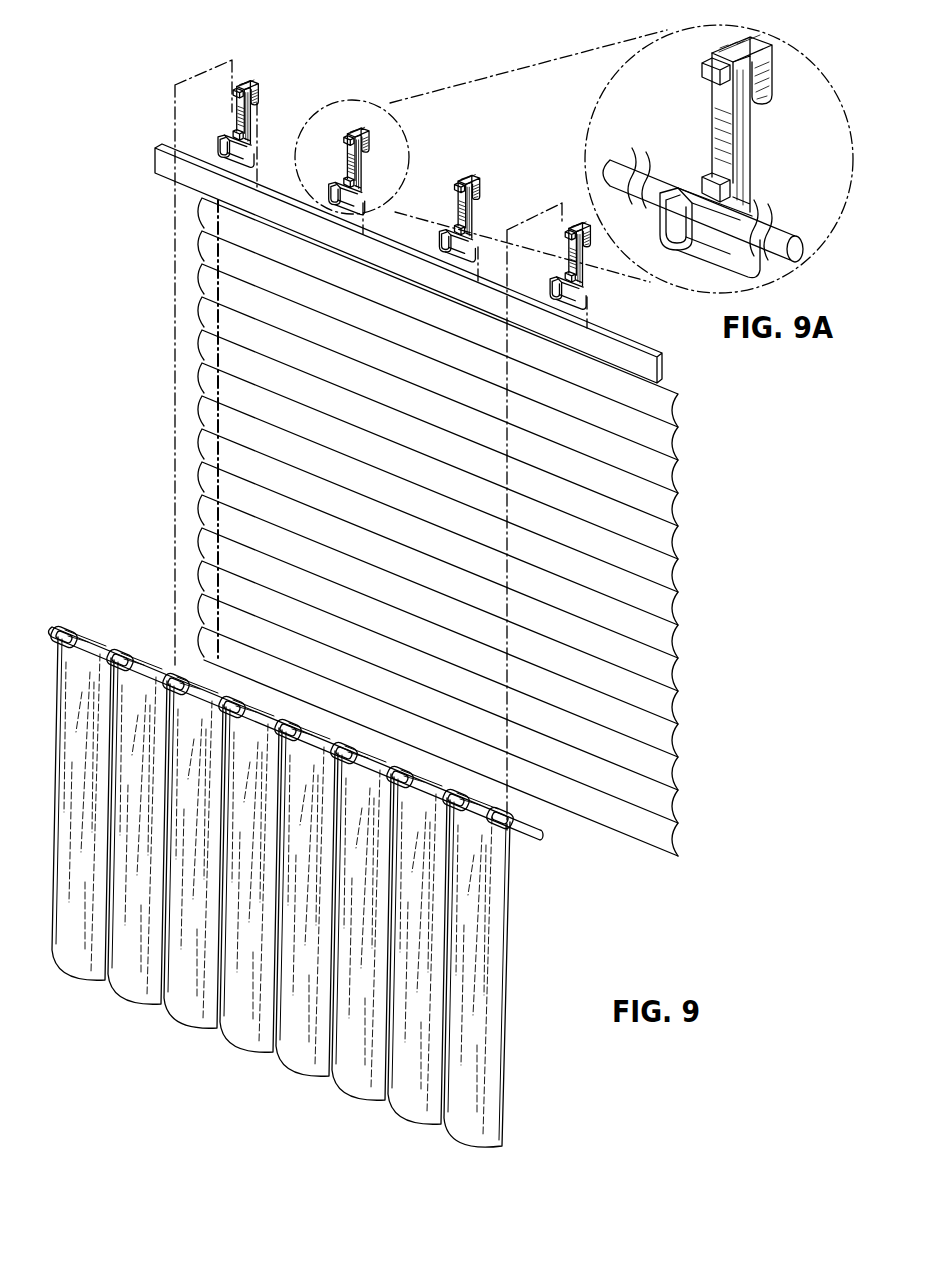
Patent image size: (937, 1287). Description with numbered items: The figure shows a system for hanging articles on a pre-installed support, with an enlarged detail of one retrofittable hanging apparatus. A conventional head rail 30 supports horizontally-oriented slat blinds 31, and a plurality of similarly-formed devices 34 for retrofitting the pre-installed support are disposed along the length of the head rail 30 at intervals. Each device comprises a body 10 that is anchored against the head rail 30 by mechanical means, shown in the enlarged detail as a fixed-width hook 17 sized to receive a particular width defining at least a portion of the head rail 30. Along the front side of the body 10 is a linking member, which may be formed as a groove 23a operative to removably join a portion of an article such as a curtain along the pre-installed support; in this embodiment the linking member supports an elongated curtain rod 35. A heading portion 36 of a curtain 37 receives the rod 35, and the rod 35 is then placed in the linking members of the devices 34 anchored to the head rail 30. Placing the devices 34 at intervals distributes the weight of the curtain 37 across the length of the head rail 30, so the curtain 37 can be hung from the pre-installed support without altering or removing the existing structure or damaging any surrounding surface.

In FIG. 9A, the body 10 is at (747, 147).
In FIG. 9A, the fixed-width hook 17 is at (770, 68).
In FIG. 9A, the groove 23a is at (703, 240).
In FIG. 9, the head rail 30 is at (156, 170).
In FIG. 9, the slat blinds 31 is at (660, 474).
In FIG. 9, the devices for retrofitting a pre-installed support 34 is at (262, 72).
In FIG. 9, the curtain rod 35 is at (58, 626).
In FIG. 9A, the curtain rod 35 is at (800, 248).
In FIG. 9, the heading portion 36 is at (478, 798).
In FIG. 9, the curtain 37 is at (505, 873).